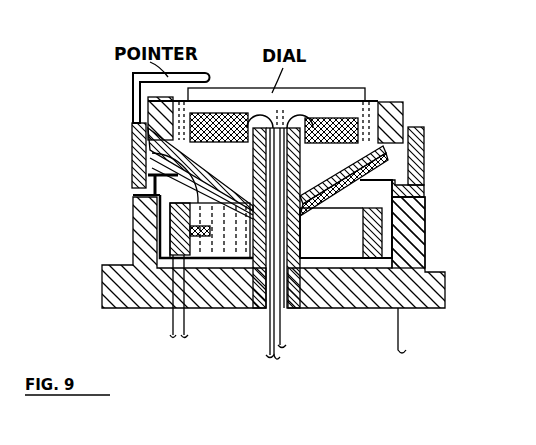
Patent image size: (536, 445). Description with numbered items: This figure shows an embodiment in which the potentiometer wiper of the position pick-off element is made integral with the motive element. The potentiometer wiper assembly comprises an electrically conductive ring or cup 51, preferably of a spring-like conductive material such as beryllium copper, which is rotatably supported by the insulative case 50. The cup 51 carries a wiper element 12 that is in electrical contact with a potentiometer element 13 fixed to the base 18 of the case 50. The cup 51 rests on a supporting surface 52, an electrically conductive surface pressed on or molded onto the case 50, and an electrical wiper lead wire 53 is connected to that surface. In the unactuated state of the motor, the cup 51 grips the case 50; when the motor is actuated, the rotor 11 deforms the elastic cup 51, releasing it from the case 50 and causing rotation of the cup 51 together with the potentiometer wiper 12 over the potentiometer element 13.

The rotor 11 is at (396, 102).
The wiper element 12 is at (133, 145).
The potentiometer element 13 is at (178, 212).
The base 18 is at (350, 310).
The case 50 is at (426, 236).
The electrically conductive ring or cup 51 is at (424, 142).
The supporting surface 52 is at (425, 191).
The electrical wiper lead wire 53 is at (401, 336).